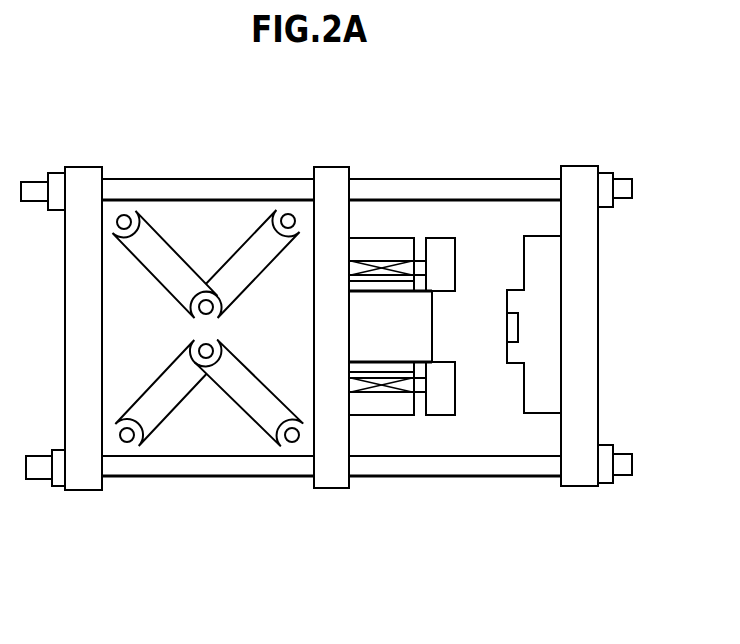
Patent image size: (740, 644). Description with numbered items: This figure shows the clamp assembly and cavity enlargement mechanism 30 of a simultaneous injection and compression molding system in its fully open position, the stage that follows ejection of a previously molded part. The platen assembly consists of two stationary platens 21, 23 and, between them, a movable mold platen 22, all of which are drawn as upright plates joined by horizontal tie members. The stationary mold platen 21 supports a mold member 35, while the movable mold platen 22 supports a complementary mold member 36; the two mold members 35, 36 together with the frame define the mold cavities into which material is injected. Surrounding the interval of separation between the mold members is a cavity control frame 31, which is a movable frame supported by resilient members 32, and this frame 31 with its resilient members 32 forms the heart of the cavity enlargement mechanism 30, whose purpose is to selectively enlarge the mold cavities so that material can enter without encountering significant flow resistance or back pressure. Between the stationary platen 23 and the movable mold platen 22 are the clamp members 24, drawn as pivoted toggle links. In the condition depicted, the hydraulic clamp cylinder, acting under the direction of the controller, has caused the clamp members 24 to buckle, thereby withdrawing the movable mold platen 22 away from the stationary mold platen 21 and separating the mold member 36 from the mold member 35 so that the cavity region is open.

The stationary mold platen 21 is at (585, 478).
The movable mold platen 22 is at (337, 481).
The stationary platen 23 is at (85, 483).
The clamp members 24 is at (162, 278).
The cavity enlargement mechanism 30 is at (455, 394).
The cavity control frame 31 is at (450, 265).
The resilient members 32 is at (390, 262).
The mold member 35 is at (543, 255).
The complementary mold member 36 is at (393, 335).